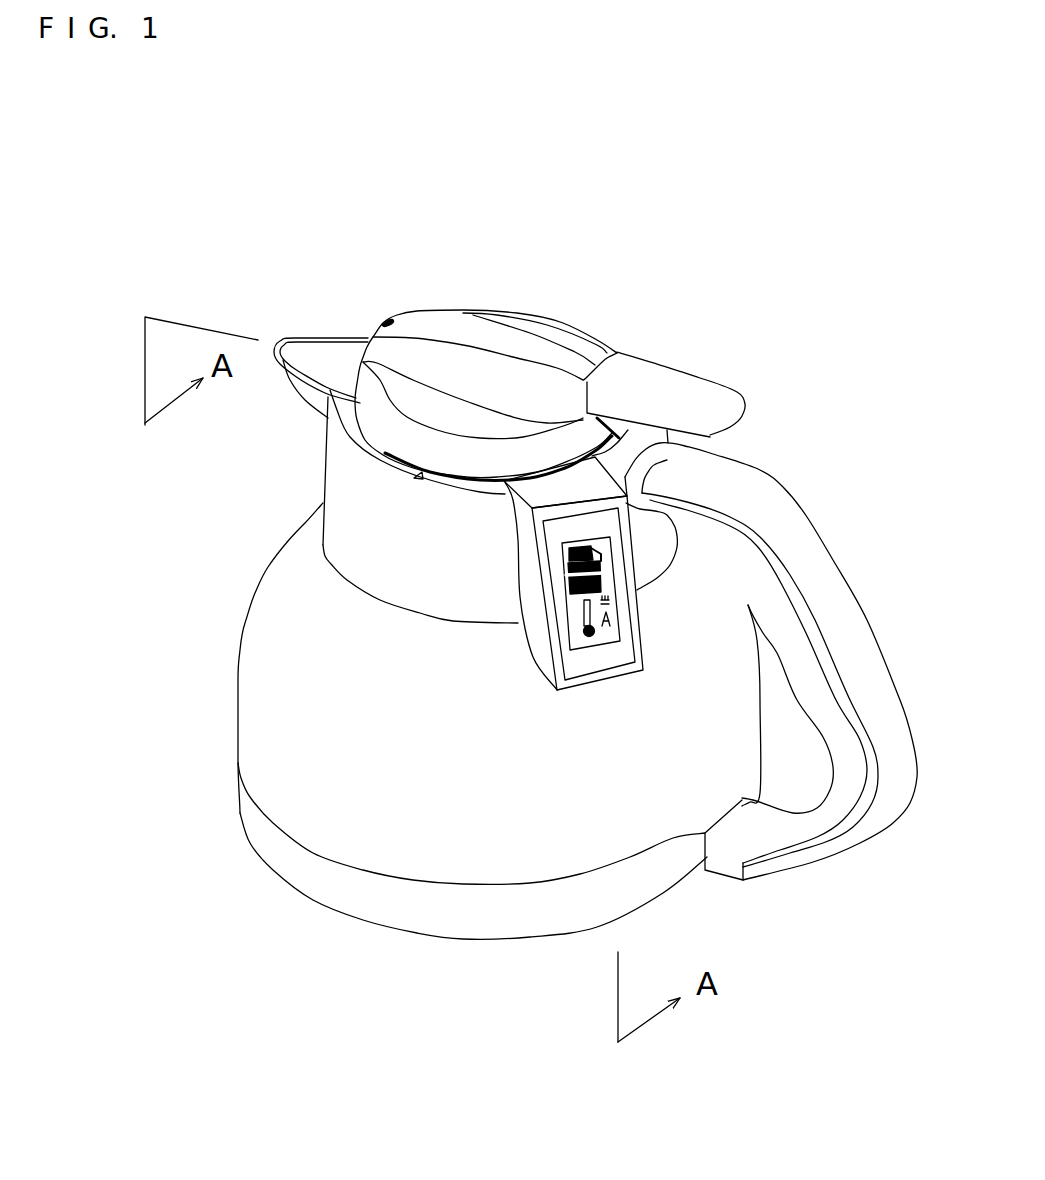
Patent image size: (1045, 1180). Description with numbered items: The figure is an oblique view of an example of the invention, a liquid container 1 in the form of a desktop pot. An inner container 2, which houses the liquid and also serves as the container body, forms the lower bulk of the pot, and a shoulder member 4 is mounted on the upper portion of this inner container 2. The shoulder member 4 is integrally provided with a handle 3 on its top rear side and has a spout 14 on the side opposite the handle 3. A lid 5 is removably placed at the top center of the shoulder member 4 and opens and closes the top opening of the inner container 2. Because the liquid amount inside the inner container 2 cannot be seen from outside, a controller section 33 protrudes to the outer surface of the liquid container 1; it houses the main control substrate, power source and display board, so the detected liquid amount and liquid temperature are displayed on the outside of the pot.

The liquid container 1 is at (633, 325).
The inner container 2 is at (238, 652).
The handle 3 is at (838, 619).
The shoulder member 4 is at (312, 472).
The lid 5 is at (530, 310).
The spout 14 is at (342, 337).
The controller section 33 is at (530, 632).